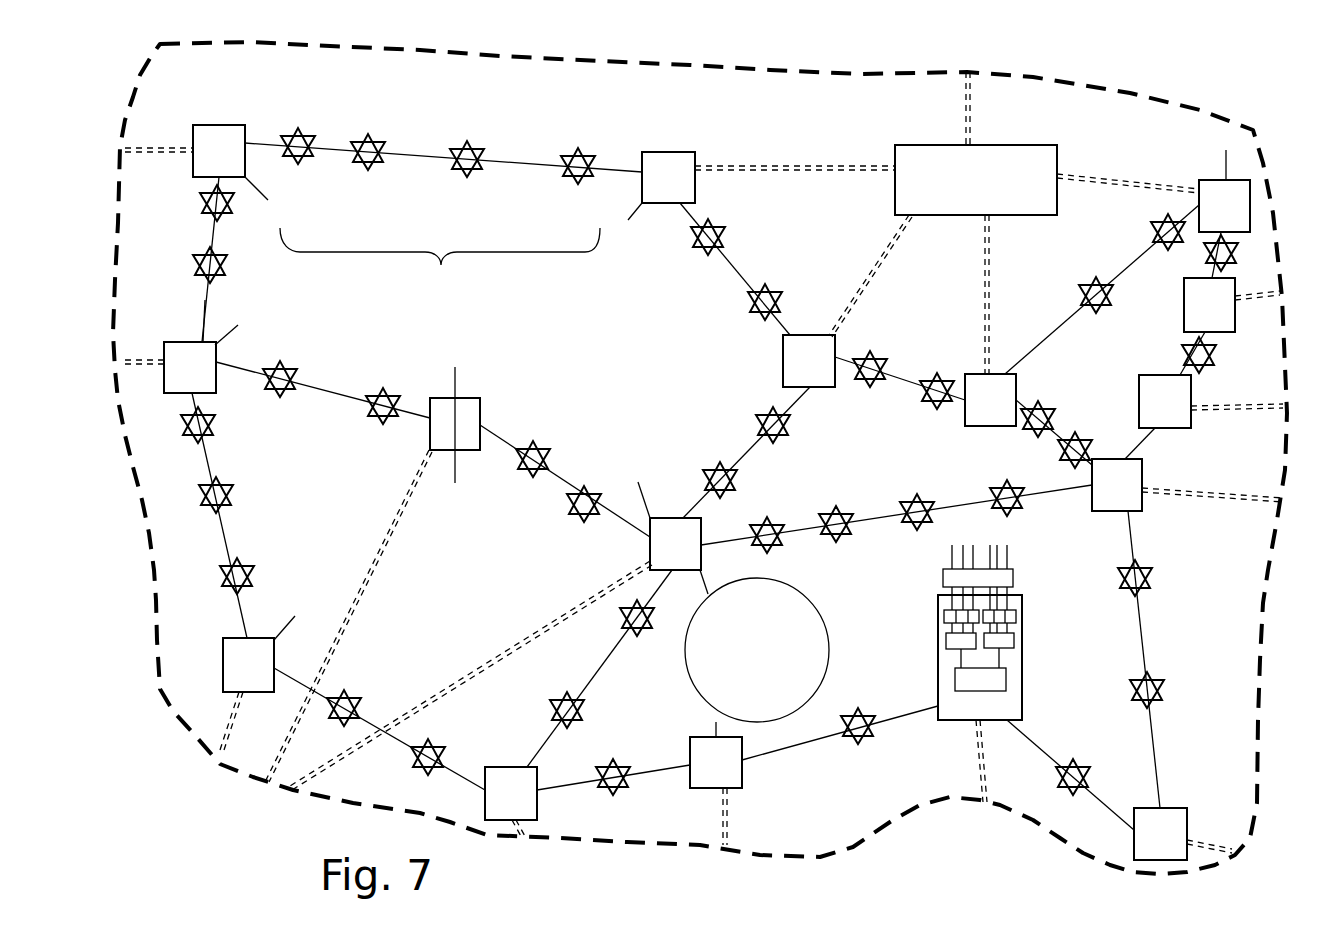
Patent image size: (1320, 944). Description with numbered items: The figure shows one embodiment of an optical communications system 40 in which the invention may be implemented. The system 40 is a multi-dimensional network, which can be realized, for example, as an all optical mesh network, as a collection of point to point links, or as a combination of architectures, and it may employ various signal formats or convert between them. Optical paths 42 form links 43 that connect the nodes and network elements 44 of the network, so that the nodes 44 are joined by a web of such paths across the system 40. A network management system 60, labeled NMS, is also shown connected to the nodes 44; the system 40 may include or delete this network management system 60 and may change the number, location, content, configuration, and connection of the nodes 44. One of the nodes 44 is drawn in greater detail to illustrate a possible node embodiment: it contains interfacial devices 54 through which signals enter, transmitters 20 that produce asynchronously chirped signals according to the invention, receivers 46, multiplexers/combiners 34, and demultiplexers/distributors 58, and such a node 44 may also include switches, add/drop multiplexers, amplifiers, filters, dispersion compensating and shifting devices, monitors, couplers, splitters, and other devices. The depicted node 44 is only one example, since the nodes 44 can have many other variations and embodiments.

The optical communications system 40 is at (240, 822).
The network management system 60 is at (930, 145).
The optical paths 42 is at (530, 160).
The links 43 is at (440, 271).
The nodes and network elements 44 is at (232, 125).
The interfacial devices 54 is at (1013, 573).
The transmitters 20 is at (938, 615).
The receivers 46 is at (1018, 614).
The multiplexers/combiners 34 is at (946, 640).
The demultiplexers/distributors 58 is at (1017, 641).